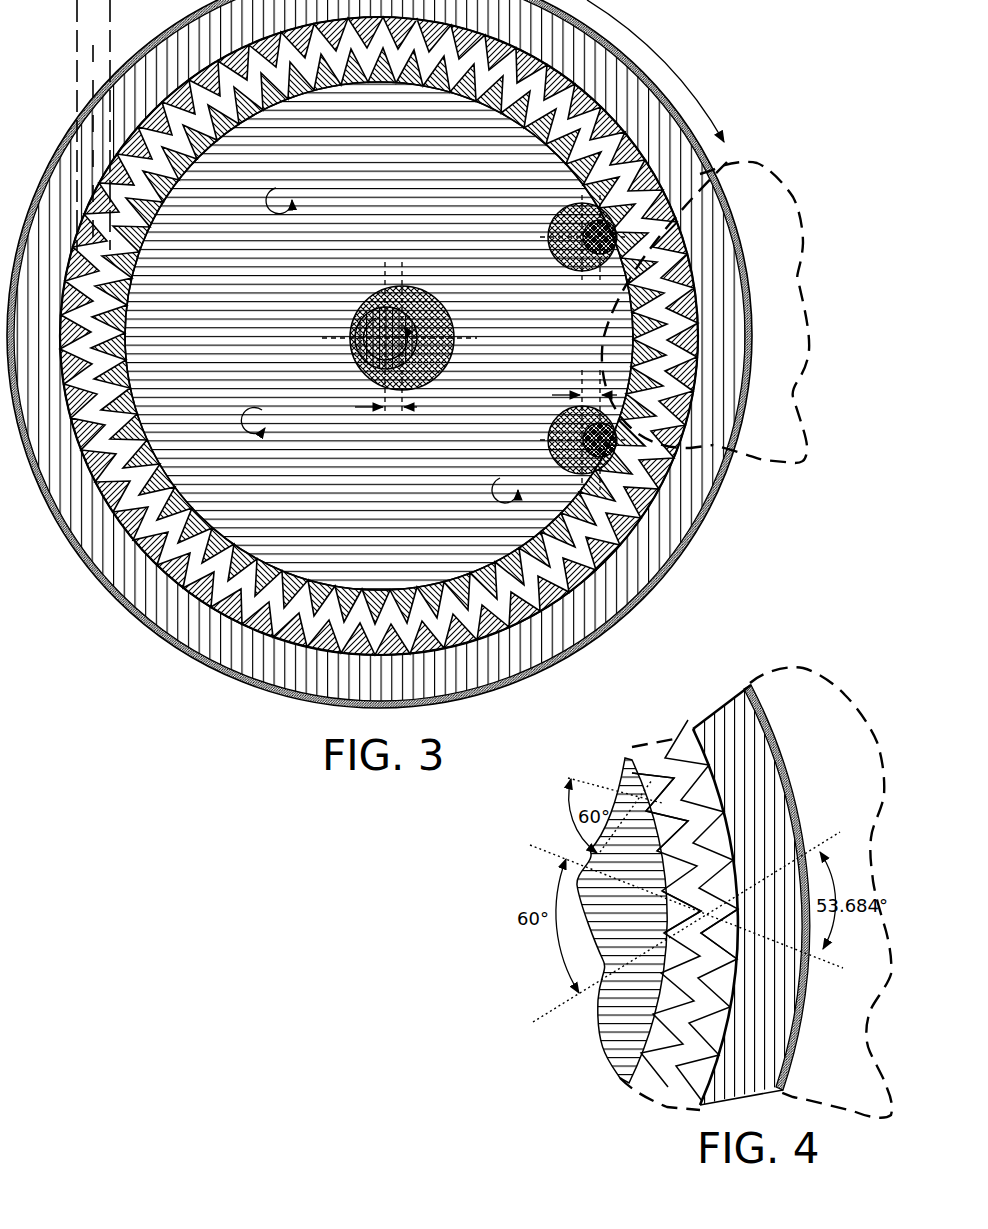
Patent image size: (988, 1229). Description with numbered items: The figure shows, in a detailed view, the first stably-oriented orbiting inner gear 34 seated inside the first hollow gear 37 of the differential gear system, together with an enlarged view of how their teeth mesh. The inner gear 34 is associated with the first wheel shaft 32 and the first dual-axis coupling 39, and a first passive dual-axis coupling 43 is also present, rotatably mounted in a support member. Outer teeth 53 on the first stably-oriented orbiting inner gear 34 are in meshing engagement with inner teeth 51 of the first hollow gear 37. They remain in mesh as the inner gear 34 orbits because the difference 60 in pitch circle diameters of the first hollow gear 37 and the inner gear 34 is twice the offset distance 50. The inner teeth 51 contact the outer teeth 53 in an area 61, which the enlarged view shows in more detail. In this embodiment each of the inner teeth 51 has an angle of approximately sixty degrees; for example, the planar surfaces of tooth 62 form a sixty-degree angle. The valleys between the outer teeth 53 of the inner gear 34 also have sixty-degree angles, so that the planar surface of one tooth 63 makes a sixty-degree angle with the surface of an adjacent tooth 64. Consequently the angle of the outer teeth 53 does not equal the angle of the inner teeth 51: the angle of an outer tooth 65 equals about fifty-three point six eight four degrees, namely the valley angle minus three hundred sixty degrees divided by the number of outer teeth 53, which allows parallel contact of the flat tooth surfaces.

In FIG. 3, the first wheel shaft 32 is at (353, 331).
In FIG. 3, the first stably-oriented orbiting inner gear 34 is at (398, 563).
In FIG. 4, the first stably-oriented orbiting inner gear 34 is at (643, 876).
In FIG. 3, the first hollow gear 37 is at (399, 690).
In FIG. 4, the first hollow gear 37 is at (774, 826).
In FIG. 3, the first dual-axis coupling 39 is at (445, 335).
In FIG. 3, the first passive dual-axis coupling 43 is at (578, 236).
In FIG. 3, the offset distance 50 is at (469, 347).
In FIG. 3, the inner teeth 51 is at (114, 396).
In FIG. 4, the inner teeth 51 is at (680, 744).
In FIG. 3, the outer teeth 53 is at (114, 398).
In FIG. 4, the outer teeth 53 is at (632, 1086).
In FIG. 3, the difference in pitch circle diameters 60 is at (93, 125).
In FIG. 3, the area 61 is at (764, 170).
In FIG. 4, the area 61 is at (830, 686).
In FIG. 4, the tooth 62 is at (729, 948).
In FIG. 4, the tooth 63 is at (673, 825).
In FIG. 4, the adjacent tooth 64 is at (659, 781).
In FIG. 4, the outer tooth 65 is at (688, 916).